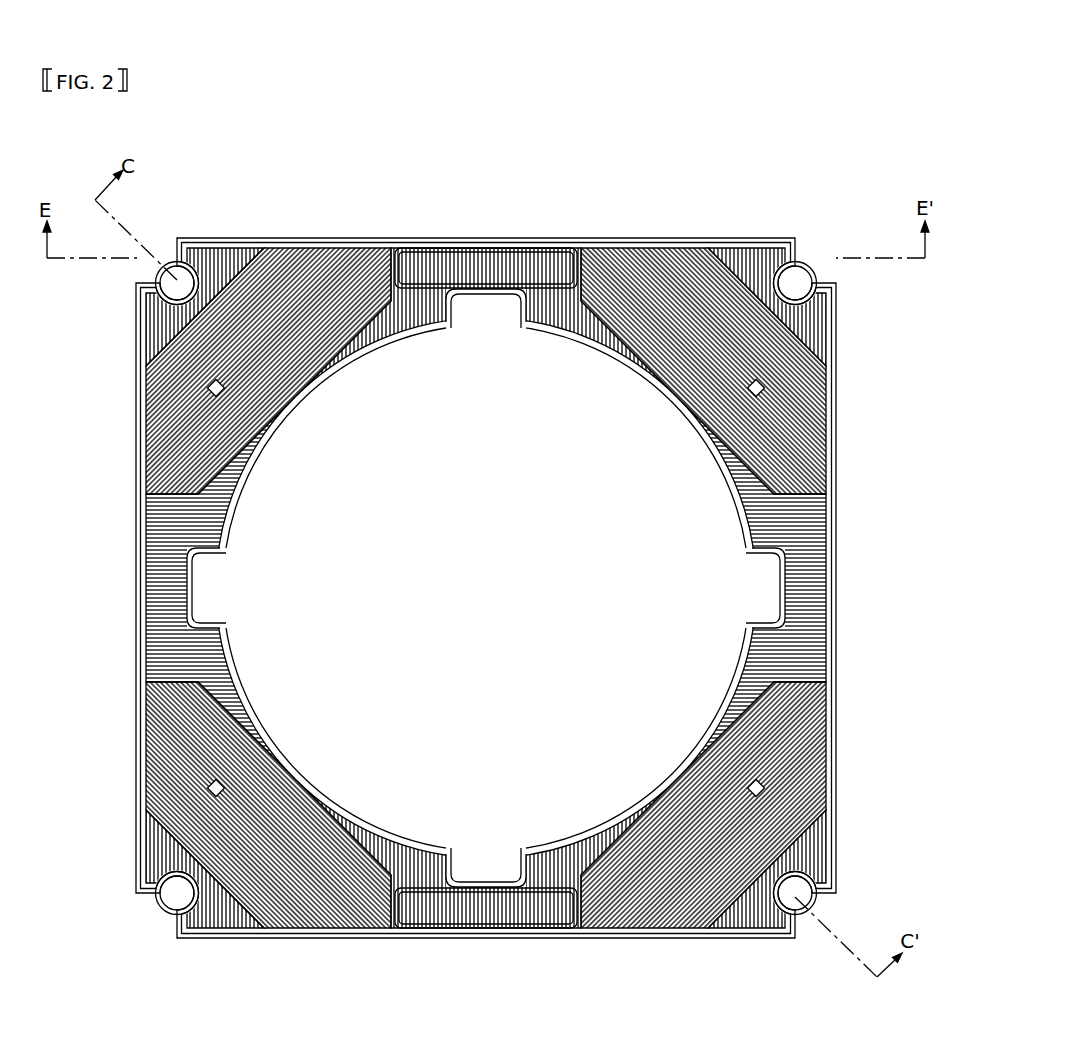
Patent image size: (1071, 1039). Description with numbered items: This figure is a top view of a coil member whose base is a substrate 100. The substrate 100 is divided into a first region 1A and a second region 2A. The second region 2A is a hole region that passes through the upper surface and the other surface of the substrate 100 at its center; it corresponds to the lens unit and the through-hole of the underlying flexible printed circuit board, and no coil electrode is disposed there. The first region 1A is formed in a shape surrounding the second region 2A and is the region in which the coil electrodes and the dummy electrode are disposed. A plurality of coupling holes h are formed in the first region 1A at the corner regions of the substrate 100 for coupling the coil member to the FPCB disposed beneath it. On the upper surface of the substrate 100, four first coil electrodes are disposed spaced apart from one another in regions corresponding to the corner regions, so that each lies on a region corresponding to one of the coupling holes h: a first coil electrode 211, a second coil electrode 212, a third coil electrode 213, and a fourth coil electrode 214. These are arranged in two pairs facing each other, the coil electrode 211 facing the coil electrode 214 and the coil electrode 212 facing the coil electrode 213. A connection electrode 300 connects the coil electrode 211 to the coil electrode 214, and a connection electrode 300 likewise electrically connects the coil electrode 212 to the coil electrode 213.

The substrate 100 is at (836, 610).
The first region 1A is at (160, 525).
The second region 2A is at (623, 572).
The 1-1 coil electrode 211 is at (318, 257).
The 1-2 coil electrode 212 is at (318, 920).
The 1-3 coil electrode 213 is at (647, 257).
The 1-4 coil electrode 214 is at (647, 918).
The connection electrode 300 is at (471, 284).
The coupling hole h is at (172, 252).